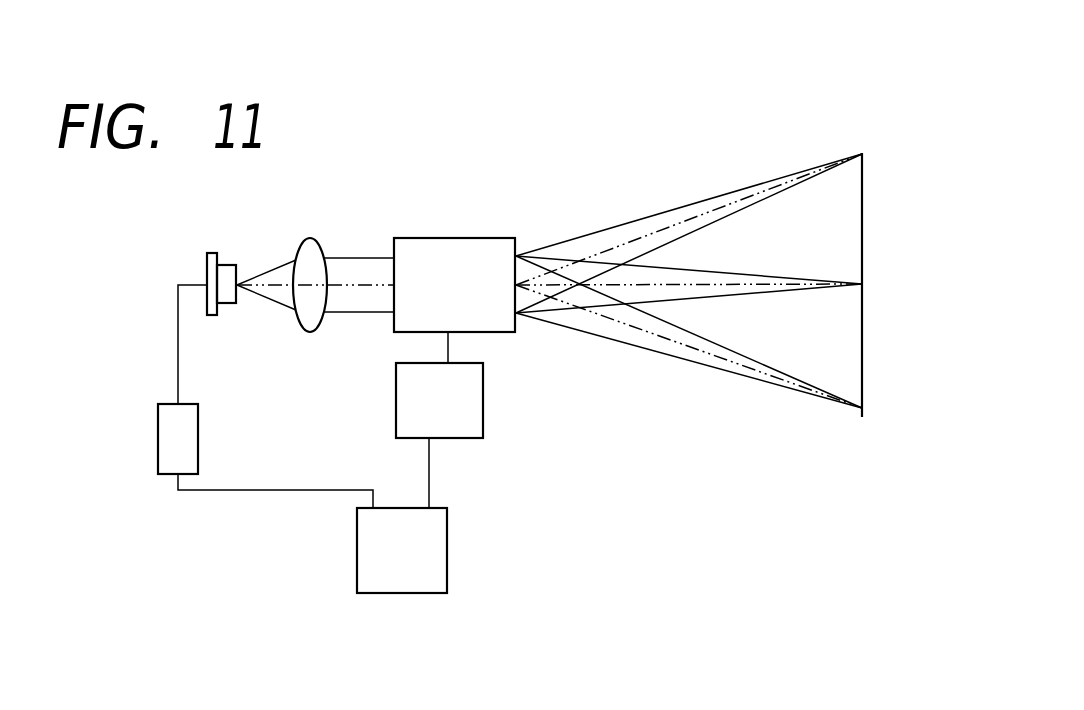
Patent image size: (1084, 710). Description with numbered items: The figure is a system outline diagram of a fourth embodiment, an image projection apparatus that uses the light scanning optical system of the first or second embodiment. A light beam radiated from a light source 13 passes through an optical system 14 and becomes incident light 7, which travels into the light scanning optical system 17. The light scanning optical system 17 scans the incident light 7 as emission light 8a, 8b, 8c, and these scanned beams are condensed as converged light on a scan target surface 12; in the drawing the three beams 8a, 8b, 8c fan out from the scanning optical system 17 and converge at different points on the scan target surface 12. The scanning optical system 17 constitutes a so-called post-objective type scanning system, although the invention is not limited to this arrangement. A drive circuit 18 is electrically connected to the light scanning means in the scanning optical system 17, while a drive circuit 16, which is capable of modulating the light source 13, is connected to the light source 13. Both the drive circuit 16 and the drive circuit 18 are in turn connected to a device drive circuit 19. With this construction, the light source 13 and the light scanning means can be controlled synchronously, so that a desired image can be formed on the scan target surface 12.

The incident light 7 is at (369, 257).
The emission light 8a is at (704, 283).
The emission light 8b is at (633, 238).
The emission light 8c is at (644, 330).
The scan target surface 12 is at (864, 186).
The light source 13 is at (220, 278).
The optical system 14 is at (321, 250).
The drive circuit 16 is at (199, 415).
The light scanning optical system 17 is at (476, 238).
The drive circuit 18 is at (484, 385).
The device drive circuit 19 is at (448, 526).